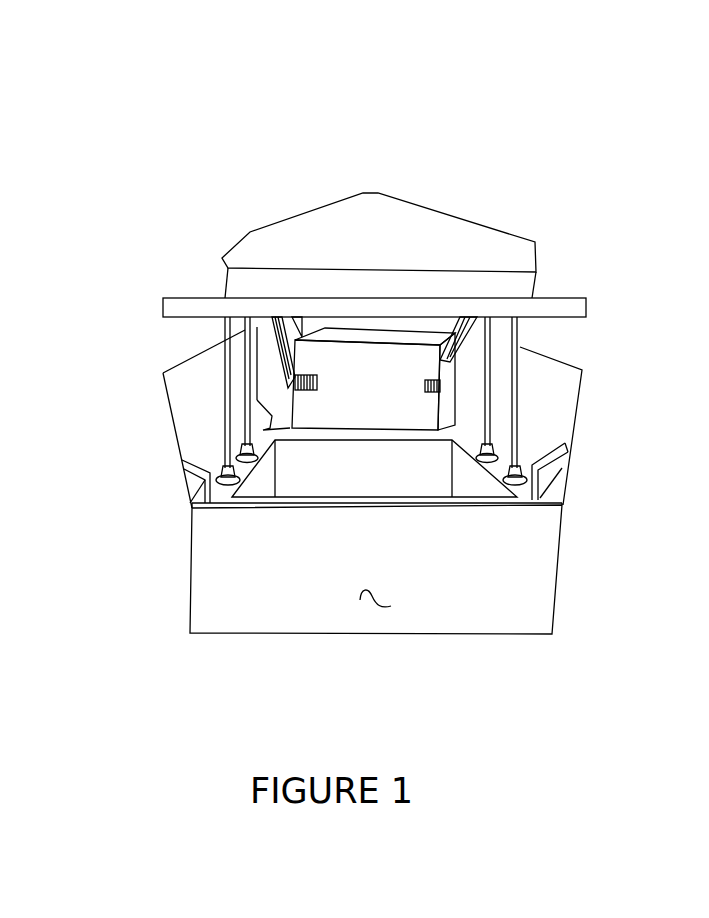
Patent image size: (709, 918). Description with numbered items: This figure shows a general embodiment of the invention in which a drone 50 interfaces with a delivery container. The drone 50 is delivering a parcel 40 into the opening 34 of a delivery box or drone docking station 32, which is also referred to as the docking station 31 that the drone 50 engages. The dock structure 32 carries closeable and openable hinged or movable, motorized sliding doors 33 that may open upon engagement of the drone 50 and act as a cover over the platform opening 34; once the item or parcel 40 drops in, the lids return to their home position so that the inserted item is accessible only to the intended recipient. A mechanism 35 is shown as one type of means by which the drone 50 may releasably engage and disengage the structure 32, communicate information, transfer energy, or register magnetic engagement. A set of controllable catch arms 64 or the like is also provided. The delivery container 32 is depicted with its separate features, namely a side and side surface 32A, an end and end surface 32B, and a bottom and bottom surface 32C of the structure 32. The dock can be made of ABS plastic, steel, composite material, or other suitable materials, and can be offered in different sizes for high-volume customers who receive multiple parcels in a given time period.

The docking station 31 is at (156, 668).
The delivery box/drone docking station 32 is at (603, 588).
The side surface 32A is at (373, 605).
The end surface 32B is at (188, 568).
The bottom surface 32C is at (437, 635).
The doors 33 is at (198, 395).
The opening 34 is at (357, 478).
The mechanism 35 is at (520, 387).
The parcel 40 is at (365, 383).
The drone 50 is at (400, 227).
The controllable catch arms 64 is at (445, 360).